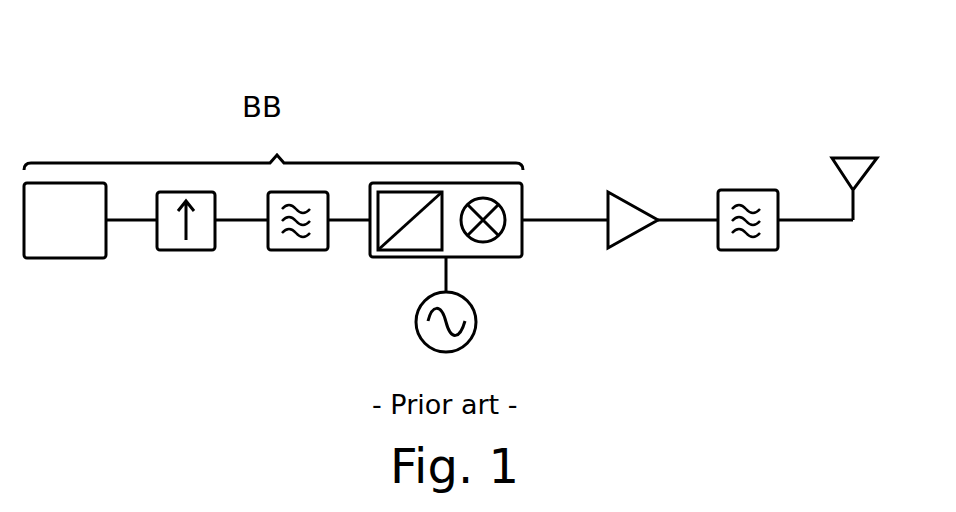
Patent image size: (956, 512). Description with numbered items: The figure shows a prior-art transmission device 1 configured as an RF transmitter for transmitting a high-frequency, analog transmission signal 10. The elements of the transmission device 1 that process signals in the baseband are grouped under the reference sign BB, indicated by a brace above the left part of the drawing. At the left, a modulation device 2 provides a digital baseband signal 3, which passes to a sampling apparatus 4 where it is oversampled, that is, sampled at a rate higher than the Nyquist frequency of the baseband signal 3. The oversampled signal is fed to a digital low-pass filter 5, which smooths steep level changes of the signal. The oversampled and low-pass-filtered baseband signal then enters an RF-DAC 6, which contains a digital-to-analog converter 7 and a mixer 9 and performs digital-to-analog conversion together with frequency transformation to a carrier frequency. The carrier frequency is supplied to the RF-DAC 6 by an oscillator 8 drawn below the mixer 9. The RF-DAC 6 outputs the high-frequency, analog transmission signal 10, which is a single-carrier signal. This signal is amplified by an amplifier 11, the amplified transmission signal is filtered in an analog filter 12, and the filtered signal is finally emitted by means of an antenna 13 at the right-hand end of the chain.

The transmission device 1 is at (685, 84).
The modulation device 2 is at (85, 230).
The digital baseband signal 3 is at (147, 220).
The sampling apparatus 4 is at (200, 238).
The digital low-pass filter 5 is at (318, 240).
The RF-DAC 6 is at (377, 252).
The digital-to-analog converter 7 is at (412, 237).
The oscillator 8 is at (462, 313).
The mixer 9 is at (502, 237).
The high-frequency, analog transmission signal 10 is at (558, 222).
The amplifier 11 is at (631, 222).
The analog filter 12 is at (737, 233).
The antenna 13 is at (870, 177).